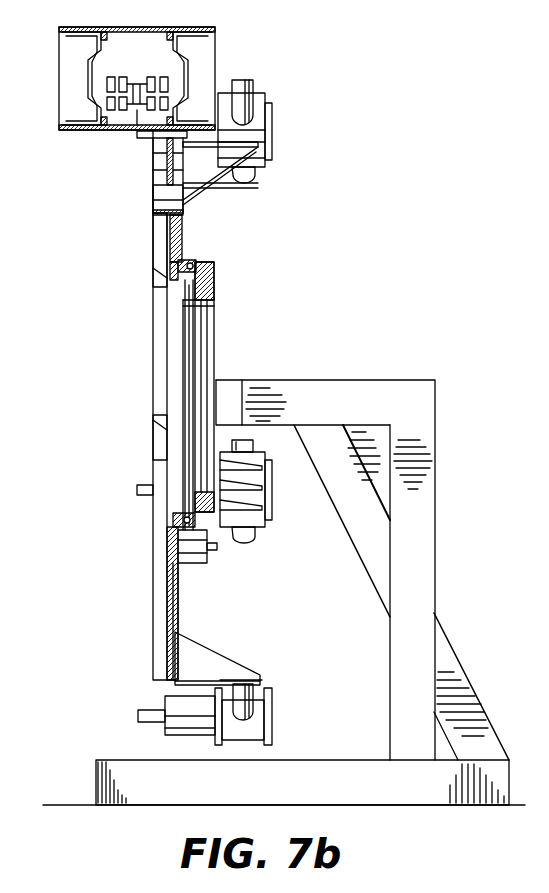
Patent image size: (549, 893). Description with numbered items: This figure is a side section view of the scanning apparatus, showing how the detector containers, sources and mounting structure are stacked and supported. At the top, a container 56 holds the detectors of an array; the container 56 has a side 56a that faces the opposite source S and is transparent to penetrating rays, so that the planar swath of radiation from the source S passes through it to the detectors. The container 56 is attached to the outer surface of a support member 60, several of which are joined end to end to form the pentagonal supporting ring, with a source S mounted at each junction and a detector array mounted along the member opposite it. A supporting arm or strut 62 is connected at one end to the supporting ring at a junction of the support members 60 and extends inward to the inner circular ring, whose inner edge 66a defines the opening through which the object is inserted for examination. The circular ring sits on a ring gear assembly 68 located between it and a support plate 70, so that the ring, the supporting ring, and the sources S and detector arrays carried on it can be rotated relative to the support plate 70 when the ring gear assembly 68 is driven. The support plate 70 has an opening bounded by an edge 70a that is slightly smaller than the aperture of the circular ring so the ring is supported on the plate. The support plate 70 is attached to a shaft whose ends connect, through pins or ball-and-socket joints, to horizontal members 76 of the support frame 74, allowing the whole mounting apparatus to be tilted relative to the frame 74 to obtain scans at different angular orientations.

The container 56 is at (216, 57).
The side of container 56a is at (72, 130).
The support member 60 is at (168, 150).
The ring gear assembly 68 is at (186, 266).
The support plate 70 is at (215, 280).
The edge of support plate opening 70a is at (199, 496).
The inner edge of circular ring 66a is at (186, 503).
The supporting arm or strut 62 is at (156, 624).
The horizontal member 76 is at (342, 380).
The support frame 74 is at (447, 460).
The source S is at (272, 138).